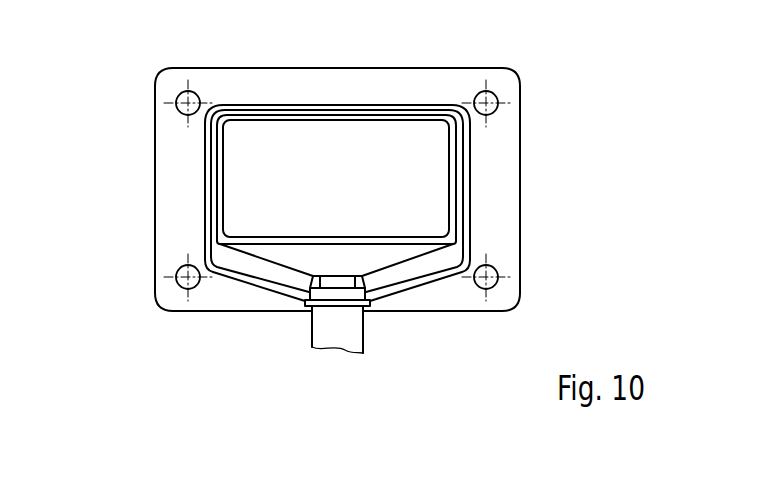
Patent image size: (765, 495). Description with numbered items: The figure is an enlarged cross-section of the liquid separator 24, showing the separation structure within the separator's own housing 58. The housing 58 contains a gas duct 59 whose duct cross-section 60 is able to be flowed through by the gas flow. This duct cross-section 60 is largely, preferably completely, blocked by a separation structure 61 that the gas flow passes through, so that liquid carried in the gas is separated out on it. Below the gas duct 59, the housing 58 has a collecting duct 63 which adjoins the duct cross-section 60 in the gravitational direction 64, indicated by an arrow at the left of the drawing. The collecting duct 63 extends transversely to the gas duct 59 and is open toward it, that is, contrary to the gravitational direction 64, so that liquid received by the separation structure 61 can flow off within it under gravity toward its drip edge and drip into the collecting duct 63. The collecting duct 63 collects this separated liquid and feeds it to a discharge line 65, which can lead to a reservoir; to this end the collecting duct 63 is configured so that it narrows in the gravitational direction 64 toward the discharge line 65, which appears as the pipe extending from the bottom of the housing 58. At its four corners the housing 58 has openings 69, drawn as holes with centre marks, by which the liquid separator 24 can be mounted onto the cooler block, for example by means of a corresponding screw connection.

The liquid separator 24 is at (566, 112).
The housing 58 is at (532, 187).
The gas duct 59 is at (385, 138).
The duct cross-section 60 is at (307, 182).
The separation structure 61 is at (257, 193).
The collecting duct 63 is at (387, 263).
The gravitational direction 64 is at (93, 107).
The discharge line 65 is at (353, 335).
The openings 69 is at (180, 95).